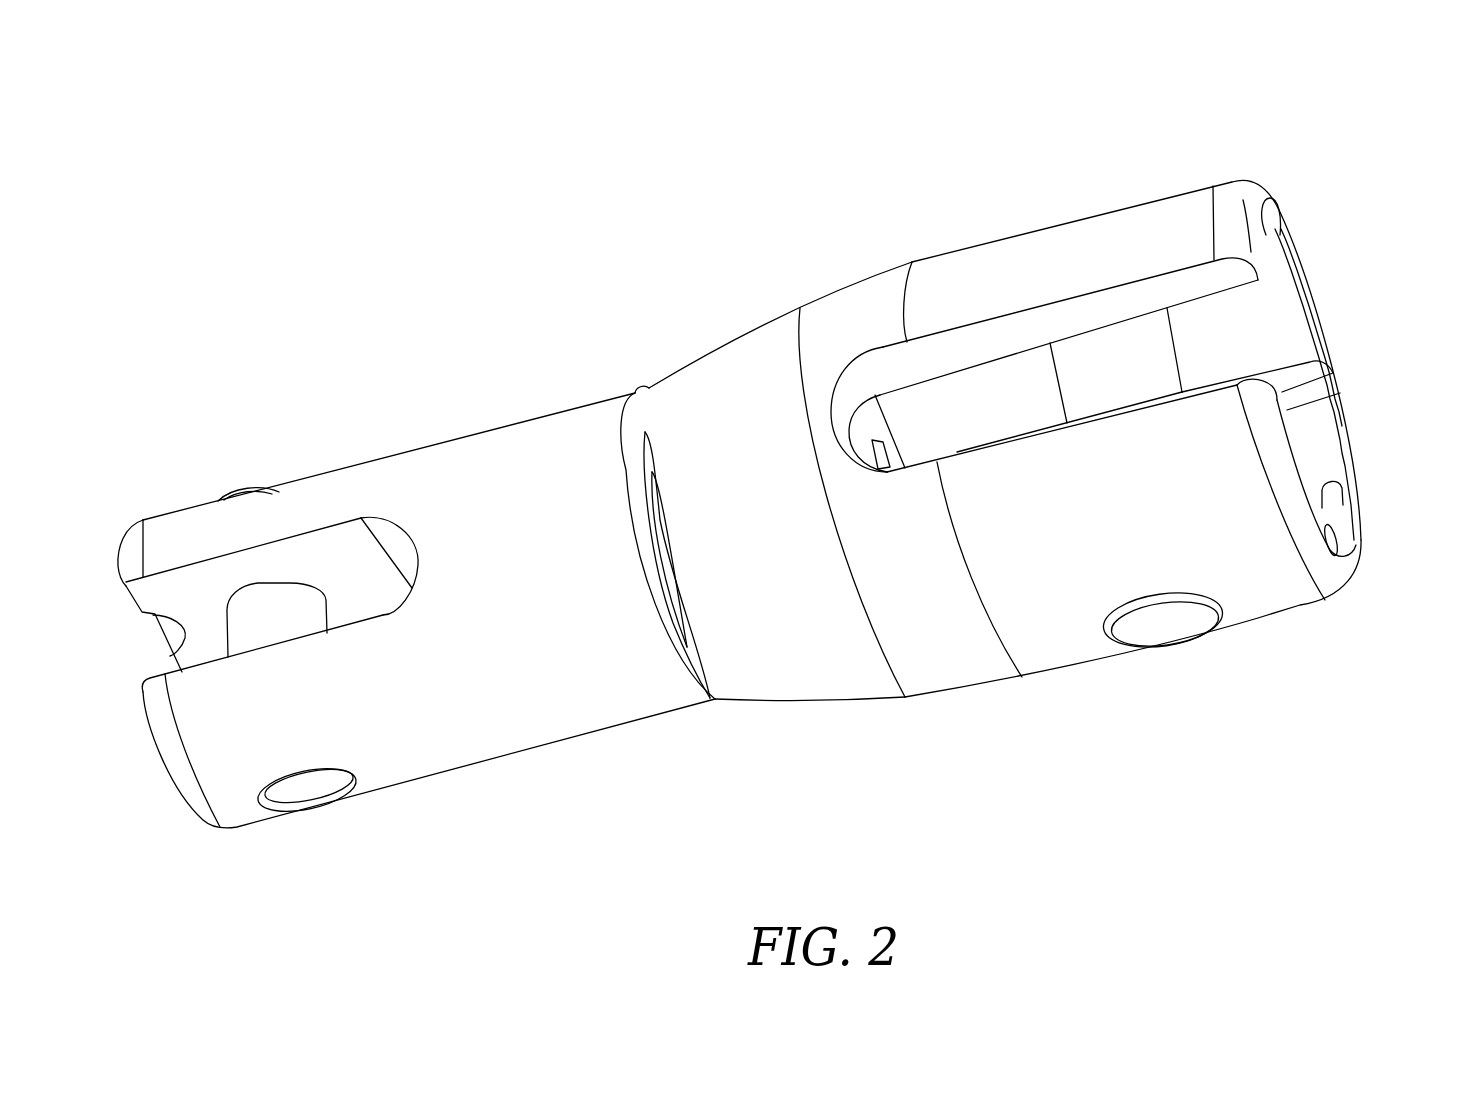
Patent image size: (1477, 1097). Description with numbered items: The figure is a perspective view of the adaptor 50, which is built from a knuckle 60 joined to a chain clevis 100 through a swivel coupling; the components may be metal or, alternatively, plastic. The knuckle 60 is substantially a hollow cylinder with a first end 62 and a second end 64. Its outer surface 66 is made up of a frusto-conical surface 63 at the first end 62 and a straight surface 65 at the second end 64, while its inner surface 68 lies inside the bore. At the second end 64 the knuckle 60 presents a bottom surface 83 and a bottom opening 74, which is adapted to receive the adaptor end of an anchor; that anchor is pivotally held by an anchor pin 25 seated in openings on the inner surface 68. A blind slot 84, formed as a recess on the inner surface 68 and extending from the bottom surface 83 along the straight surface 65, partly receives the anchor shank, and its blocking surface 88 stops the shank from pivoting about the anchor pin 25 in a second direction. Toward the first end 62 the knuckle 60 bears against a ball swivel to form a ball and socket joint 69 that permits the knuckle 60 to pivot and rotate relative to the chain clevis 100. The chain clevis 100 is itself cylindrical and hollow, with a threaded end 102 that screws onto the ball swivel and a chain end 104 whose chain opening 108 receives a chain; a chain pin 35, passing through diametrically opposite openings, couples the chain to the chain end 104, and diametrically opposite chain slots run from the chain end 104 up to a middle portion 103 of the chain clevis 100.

The adaptor 50 is at (1374, 134).
The chain clevis 100 is at (412, 405).
The threaded end 102 is at (603, 707).
The middle portion 103 is at (390, 470).
The chain end 104 is at (165, 522).
The chain opening 108 is at (165, 595).
The chain pin 35 is at (303, 797).
The knuckle 60 is at (996, 212).
The first end 62 is at (747, 680).
The frusto-conical surface 63 is at (737, 536).
The second end 64 is at (1200, 200).
The straight surface 65 is at (1102, 520).
The outer surface 66 is at (1055, 276).
The inner surface 68 is at (1205, 353).
The ball and socket joint 69 is at (646, 340).
The bottom opening 74 is at (1278, 310).
The bottom surface 83 is at (1262, 222).
The blind slot 84 is at (1326, 425).
The blocking surface 88 is at (1340, 456).
The anchor pin 25 is at (1163, 623).